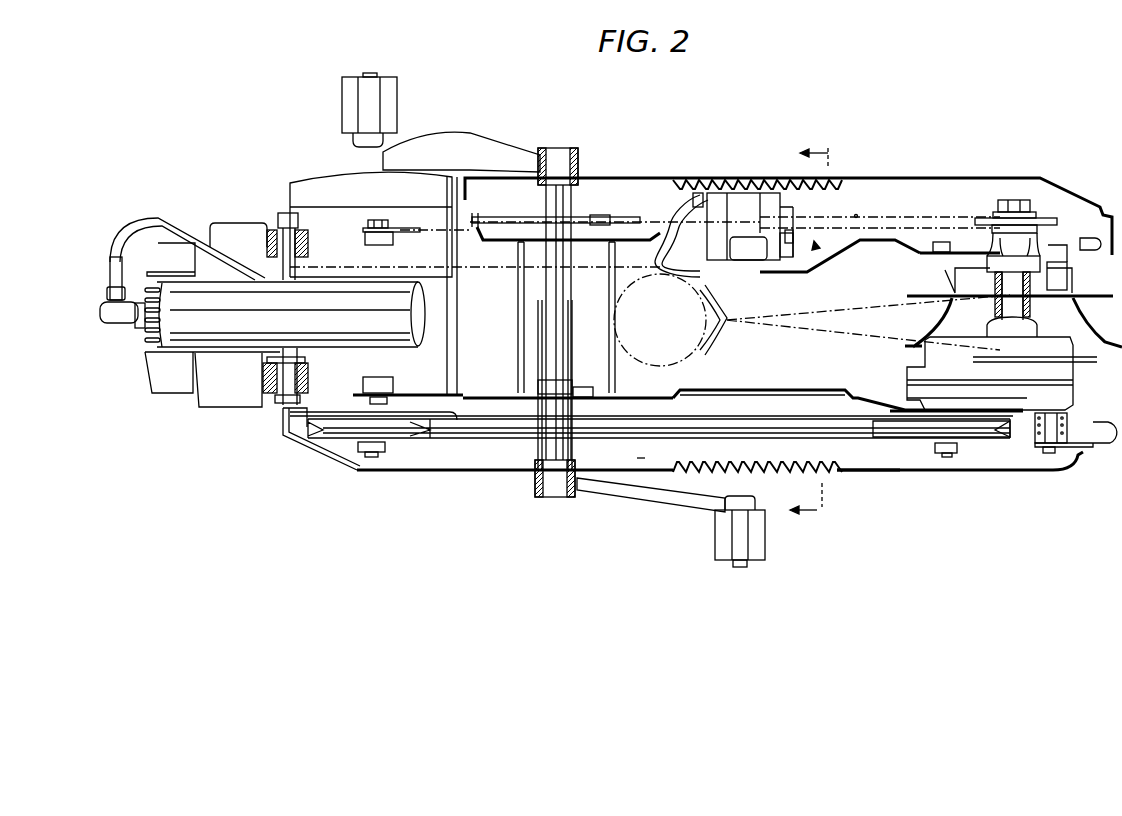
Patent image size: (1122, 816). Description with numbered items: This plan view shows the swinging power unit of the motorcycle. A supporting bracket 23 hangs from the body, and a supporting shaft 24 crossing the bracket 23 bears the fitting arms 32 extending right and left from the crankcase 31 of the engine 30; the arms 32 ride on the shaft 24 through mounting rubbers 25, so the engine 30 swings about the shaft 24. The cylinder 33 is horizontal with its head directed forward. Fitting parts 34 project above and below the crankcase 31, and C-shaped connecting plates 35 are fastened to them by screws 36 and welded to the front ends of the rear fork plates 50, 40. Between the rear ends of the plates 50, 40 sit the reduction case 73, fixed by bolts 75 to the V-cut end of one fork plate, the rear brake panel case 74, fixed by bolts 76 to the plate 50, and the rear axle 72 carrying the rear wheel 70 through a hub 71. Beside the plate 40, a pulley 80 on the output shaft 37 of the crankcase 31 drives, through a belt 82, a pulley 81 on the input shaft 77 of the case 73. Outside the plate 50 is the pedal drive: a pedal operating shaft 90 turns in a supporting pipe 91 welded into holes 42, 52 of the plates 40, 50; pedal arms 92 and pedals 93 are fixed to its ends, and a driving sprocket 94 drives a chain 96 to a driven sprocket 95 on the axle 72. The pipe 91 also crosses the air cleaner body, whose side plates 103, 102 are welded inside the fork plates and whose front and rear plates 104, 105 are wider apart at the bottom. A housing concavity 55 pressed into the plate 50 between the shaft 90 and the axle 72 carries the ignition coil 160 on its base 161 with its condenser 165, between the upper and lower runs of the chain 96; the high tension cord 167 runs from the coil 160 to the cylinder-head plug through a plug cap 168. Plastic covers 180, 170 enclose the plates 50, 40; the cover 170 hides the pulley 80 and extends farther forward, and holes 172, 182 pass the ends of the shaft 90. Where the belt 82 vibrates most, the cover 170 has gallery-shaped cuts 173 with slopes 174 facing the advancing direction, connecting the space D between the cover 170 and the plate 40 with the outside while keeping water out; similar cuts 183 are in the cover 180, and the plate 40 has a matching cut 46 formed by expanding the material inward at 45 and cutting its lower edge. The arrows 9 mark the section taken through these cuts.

The section line 9 is at (810, 330).
The supporting bracket 23 is at (233, 353).
The supporting shaft 24 is at (292, 443).
The mounting rubbers 25 is at (272, 227).
The engine 30 is at (227, 380).
The crankcase 31 is at (330, 223).
The fitting arms 32 is at (267, 242).
The cylinder 33 is at (225, 230).
The fitting parts 34 is at (383, 237).
The connecting plates 35 is at (420, 228).
The screws 36 is at (383, 223).
The output shaft 37 is at (370, 457).
The rear fork plate 40 is at (643, 400).
The through hole 42 is at (550, 390).
The expanded plate material 45 is at (787, 388).
The cut 46 is at (748, 395).
The rear fork plate 50 is at (883, 240).
The through hole 52 is at (550, 227).
The housing concavity 55 is at (813, 248).
The rear wheel 70 is at (717, 347).
The hub 71 is at (910, 350).
The rear axle 72 is at (1010, 297).
The reduction case 73 is at (1060, 397).
The rear brake panel case 74 is at (1027, 263).
The bolts 75 is at (1013, 418).
The bolts 76 is at (945, 247).
The input shaft 77 is at (943, 457).
The pulley 80 is at (402, 432).
The pulley 81 is at (915, 433).
The belt 82 is at (853, 437).
The pedal operating shaft 90 is at (627, 305).
The supporting pipe 91 is at (573, 360).
The pedal arms 92 is at (515, 160).
The pedals 93 is at (393, 95).
The driving sprocket 94 is at (597, 220).
The driven sprocket 95 is at (1013, 210).
The chain 96 is at (856, 215).
The side plate 102 is at (597, 400).
The side plate 103 is at (603, 247).
The front plate 104 is at (520, 305).
The rear plate 105 is at (630, 337).
The ignition coil 160 is at (753, 200).
The base 161 is at (795, 252).
The condenser 165 is at (760, 262).
The high tension cord 167 is at (672, 198).
The plug cap 168 is at (124, 315).
The cover 170 is at (483, 475).
The hole 172 is at (530, 467).
The cuts 173 is at (780, 474).
The slopes 174 is at (827, 472).
The cover 180 is at (993, 178).
The hole 182 is at (583, 172).
The cuts 183 is at (730, 177).
The space D is at (640, 462).